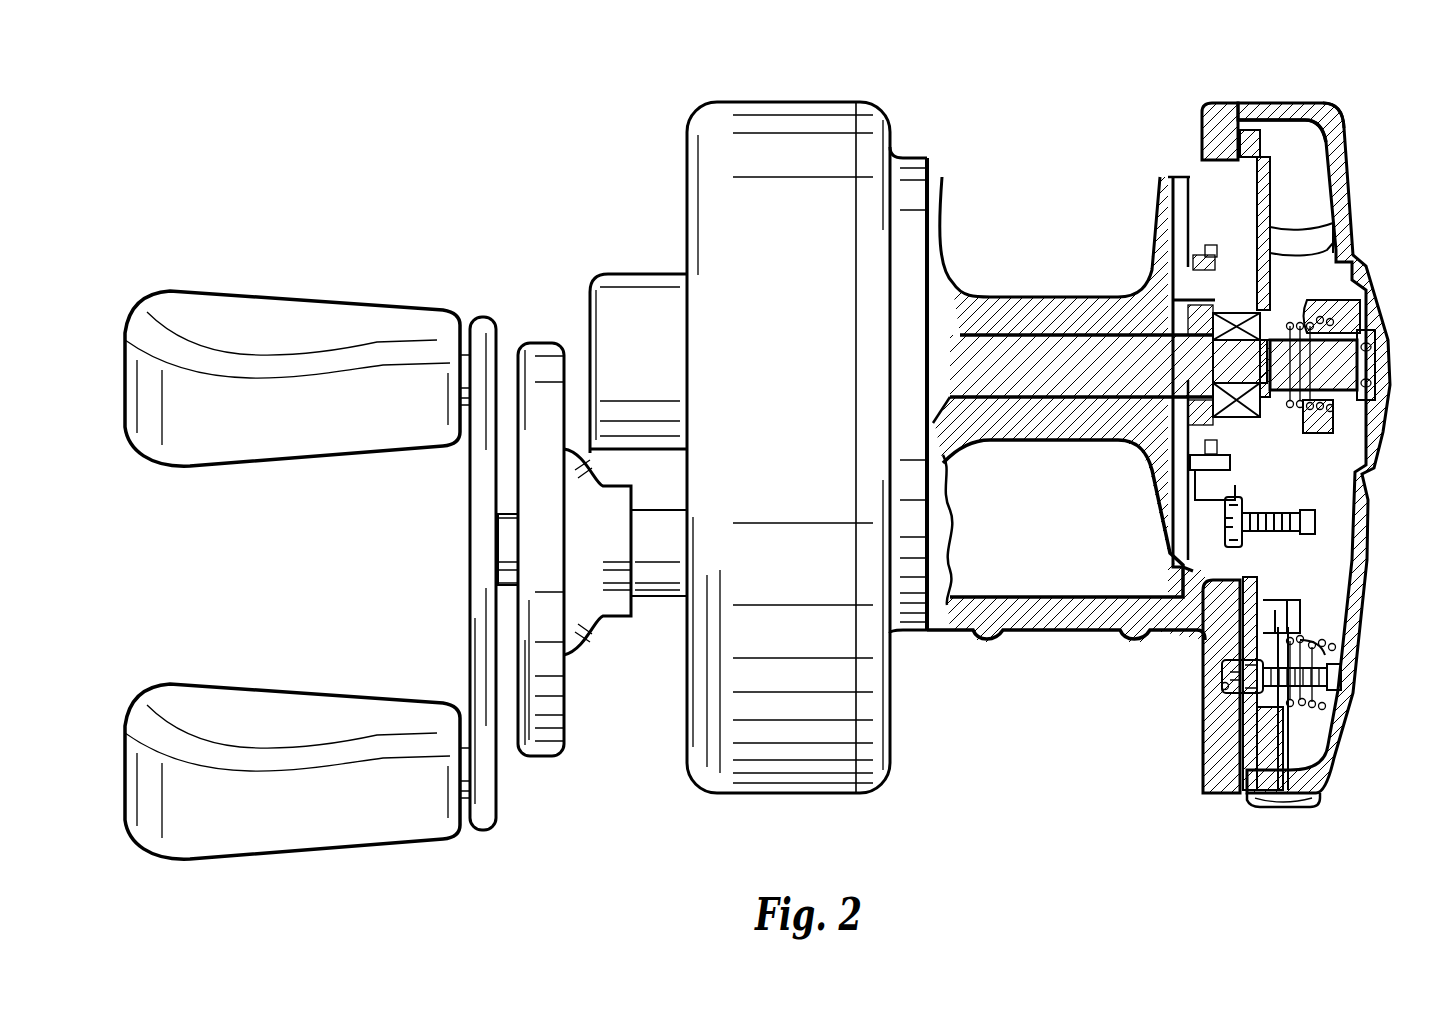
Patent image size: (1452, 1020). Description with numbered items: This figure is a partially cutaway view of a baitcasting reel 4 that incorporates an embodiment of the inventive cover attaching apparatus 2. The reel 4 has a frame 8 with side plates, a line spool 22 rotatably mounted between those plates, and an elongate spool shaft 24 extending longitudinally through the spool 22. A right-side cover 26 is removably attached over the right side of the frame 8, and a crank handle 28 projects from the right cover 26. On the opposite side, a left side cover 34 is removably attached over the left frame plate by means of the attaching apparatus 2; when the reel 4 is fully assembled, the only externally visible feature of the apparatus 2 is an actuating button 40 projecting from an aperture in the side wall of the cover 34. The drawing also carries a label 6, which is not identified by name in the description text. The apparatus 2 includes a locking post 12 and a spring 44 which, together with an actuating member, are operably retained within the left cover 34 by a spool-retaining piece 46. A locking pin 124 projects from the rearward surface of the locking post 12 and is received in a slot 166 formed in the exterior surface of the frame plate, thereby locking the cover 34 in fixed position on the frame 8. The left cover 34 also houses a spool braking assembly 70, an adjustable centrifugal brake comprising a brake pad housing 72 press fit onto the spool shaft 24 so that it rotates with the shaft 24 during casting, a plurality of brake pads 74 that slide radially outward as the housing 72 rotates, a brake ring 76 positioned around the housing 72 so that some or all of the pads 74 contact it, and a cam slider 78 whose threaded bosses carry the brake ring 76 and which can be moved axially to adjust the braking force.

The cover attaching apparatus 2 is at (1313, 672).
The baitcasting reel 4 is at (1344, 118).
The housing 6 is at (1345, 166).
The frame 8 is at (1213, 744).
The locking post 12 is at (1353, 688).
The line spool 22 is at (1133, 284).
The spool shaft 24 is at (1073, 357).
The right-side cover 26 is at (717, 127).
The crank handle 28 is at (365, 318).
The left side cover 34 is at (1290, 103).
The actuating button 40 is at (1285, 805).
The spring 44 is at (1313, 647).
The spool-retaining piece 46 is at (1336, 227).
The spool braking assembly 70 is at (1192, 253).
The brake pad housing 72 is at (1180, 441).
The brake pads 74 is at (1210, 253).
The brake ring 76 is at (1187, 507).
The cam slider 78 is at (1357, 291).
The locking pin 124 is at (1238, 675).
The slot 166 is at (1222, 683).